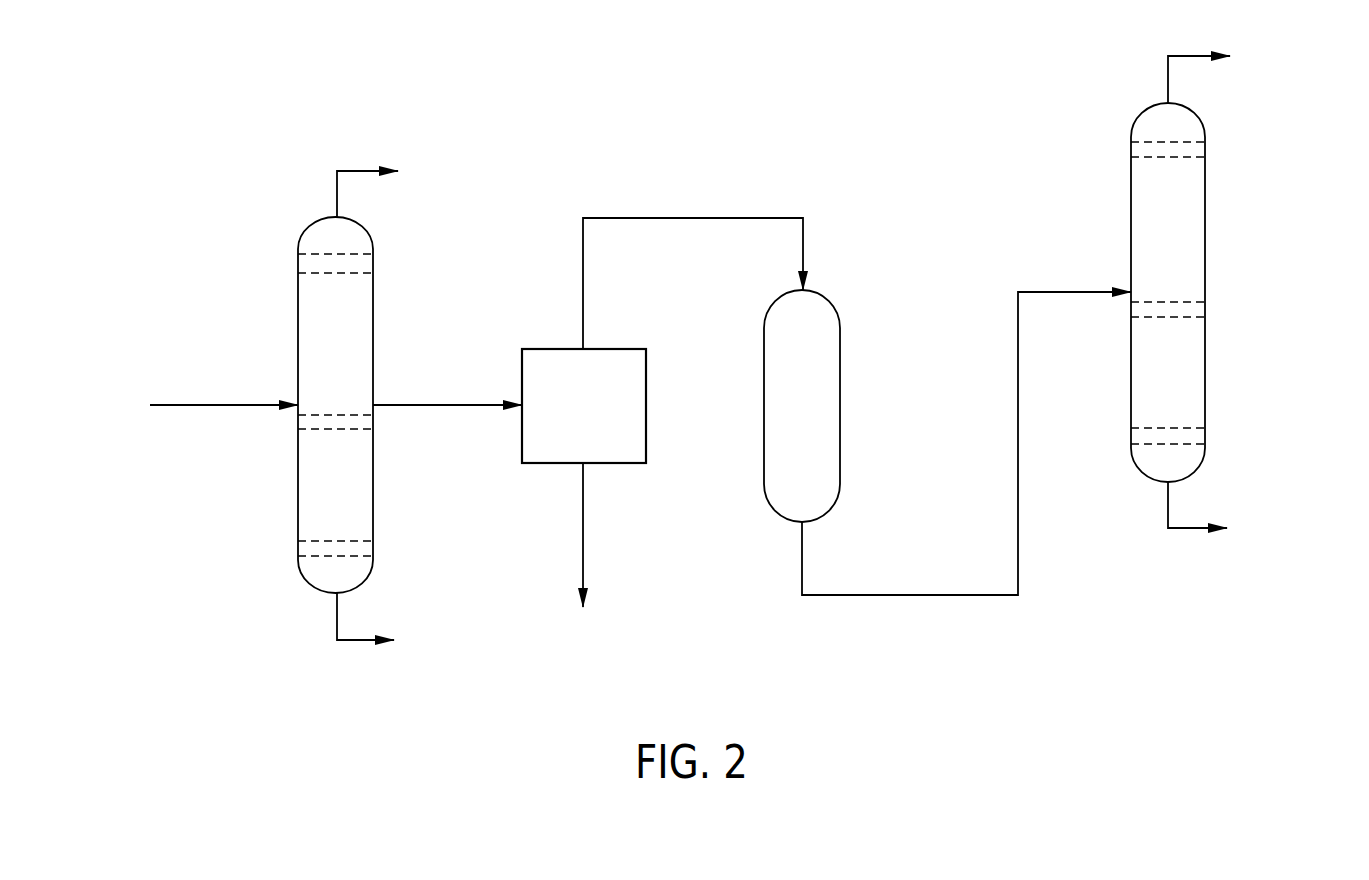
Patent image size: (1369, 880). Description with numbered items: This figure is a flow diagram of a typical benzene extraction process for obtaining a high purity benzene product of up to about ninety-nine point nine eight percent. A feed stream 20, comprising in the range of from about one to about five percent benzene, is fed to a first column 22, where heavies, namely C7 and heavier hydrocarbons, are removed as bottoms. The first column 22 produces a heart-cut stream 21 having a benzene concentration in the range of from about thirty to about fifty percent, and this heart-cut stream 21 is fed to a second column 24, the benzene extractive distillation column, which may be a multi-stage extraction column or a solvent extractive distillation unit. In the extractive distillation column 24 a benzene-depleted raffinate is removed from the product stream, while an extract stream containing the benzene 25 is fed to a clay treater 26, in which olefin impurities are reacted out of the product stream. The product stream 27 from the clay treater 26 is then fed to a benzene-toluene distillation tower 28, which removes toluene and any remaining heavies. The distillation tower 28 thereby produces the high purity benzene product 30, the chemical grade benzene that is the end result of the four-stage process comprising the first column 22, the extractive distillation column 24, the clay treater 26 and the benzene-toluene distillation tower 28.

The feed stream 20 is at (220, 405).
The heart-cut stream 21 is at (443, 405).
The first column 22 is at (362, 480).
The benzene extractive distillation column 24 is at (547, 358).
The extract stream containing the benzene 25 is at (720, 212).
The clay treater 26 is at (833, 375).
The product stream 27 is at (805, 558).
The benzene-toluene distillation tower 28 is at (1193, 377).
The high purity benzene product 30 is at (1263, 66).